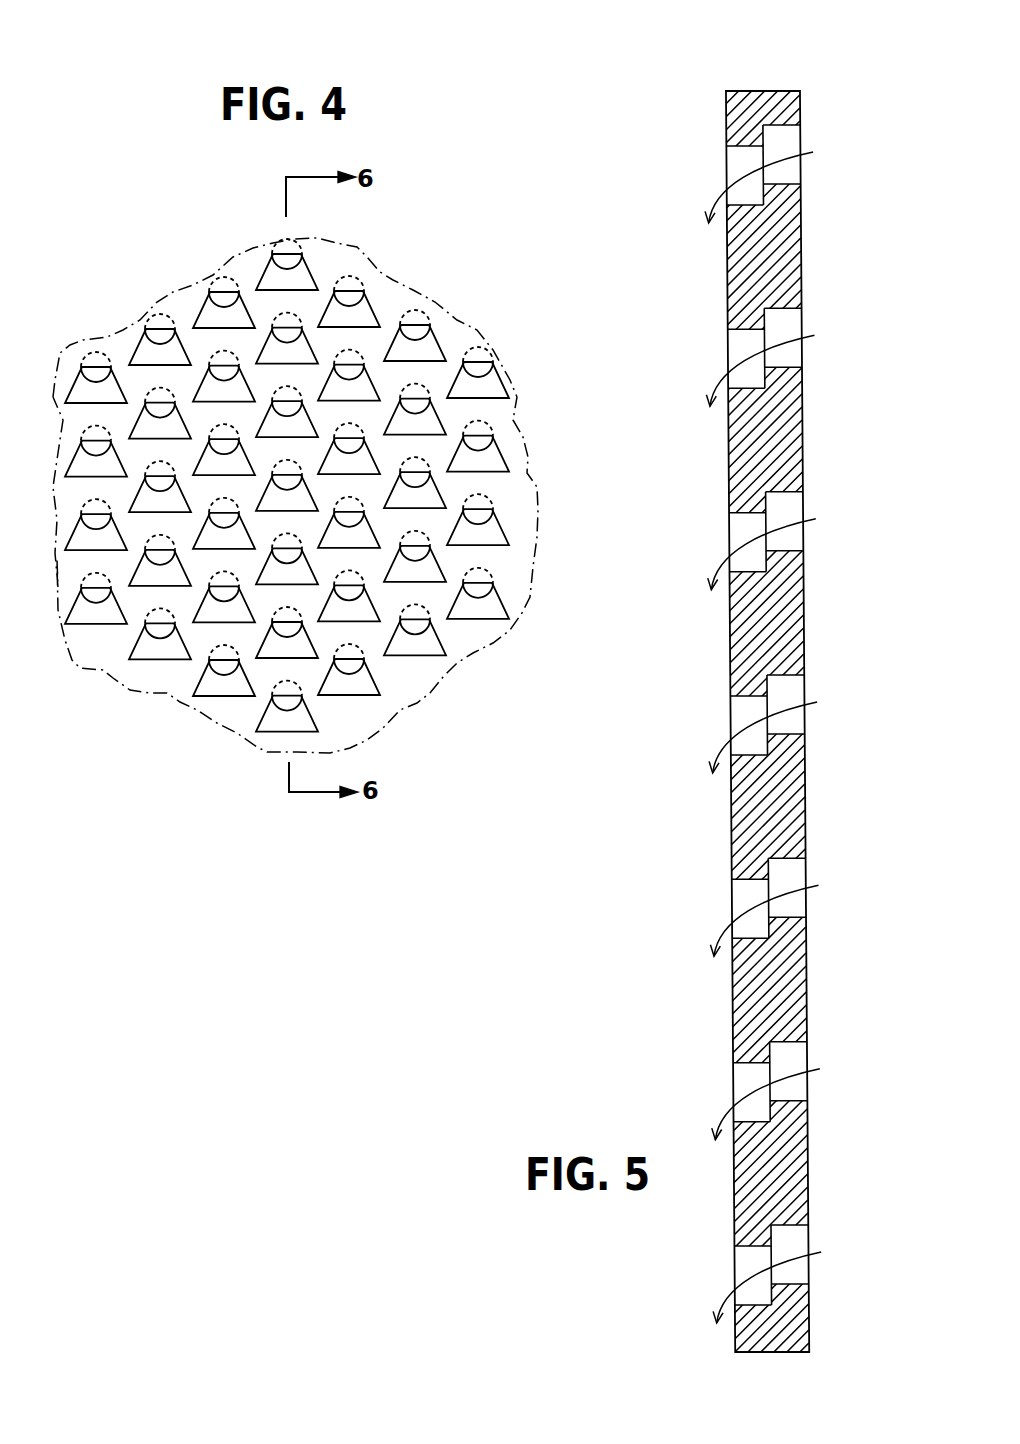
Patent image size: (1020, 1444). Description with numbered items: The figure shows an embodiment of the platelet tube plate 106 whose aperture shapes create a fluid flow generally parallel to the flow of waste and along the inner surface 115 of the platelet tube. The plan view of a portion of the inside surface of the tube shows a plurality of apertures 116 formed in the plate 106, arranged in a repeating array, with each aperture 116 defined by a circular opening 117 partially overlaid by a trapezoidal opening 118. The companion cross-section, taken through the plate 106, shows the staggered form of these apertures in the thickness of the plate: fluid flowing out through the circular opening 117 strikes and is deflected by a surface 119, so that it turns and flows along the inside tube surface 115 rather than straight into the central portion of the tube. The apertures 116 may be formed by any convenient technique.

In FIG. 5, the plate 106 is at (770, 717).
In FIG. 5, the inner surface 115 is at (733, 118).
In FIG. 4, the apertures 116 is at (202, 283).
In FIG. 4, the circular opening 117 is at (420, 327).
In FIG. 5, the circular opening 117 is at (790, 170).
In FIG. 4, the trapezoidal opening 118 is at (423, 353).
In FIG. 5, the trapezoidal opening 118 is at (738, 156).
In FIG. 5, the surface 119 is at (763, 135).